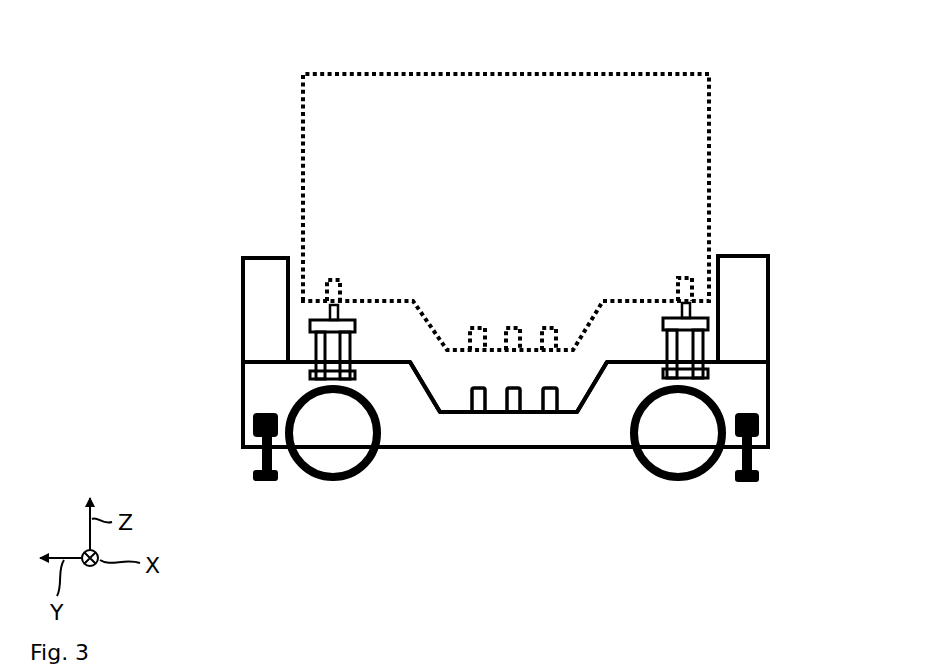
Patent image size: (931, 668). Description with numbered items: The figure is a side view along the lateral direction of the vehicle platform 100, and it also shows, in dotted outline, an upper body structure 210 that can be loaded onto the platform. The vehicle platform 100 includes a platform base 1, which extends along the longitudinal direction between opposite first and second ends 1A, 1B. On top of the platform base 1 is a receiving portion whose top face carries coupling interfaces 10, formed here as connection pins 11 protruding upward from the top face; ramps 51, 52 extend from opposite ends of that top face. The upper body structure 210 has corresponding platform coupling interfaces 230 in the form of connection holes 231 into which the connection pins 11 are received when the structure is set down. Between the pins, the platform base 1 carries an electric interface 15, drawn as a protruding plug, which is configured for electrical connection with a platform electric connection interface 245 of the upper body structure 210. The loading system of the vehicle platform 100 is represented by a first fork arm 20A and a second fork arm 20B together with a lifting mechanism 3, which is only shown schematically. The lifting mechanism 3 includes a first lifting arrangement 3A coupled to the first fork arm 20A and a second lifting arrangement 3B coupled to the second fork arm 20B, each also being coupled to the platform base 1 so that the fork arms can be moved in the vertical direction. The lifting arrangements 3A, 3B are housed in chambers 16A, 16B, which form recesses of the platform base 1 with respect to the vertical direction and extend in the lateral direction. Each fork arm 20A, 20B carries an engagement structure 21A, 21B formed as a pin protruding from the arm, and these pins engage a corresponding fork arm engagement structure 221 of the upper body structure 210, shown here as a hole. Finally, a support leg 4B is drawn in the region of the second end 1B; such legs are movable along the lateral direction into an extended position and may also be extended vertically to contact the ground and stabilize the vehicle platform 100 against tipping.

The vehicle platform 100 is at (777, 137).
The upper body structure 210 is at (547, 72).
The platform coupling interfaces 230 is at (522, 275).
The connection holes 231 is at (477, 328).
The platform electric connection interface 245 is at (513, 328).
The fork arm engagement structure 221 is at (334, 279).
The platform base 1 is at (225, 360).
The first end 1A is at (775, 247).
The second end 1B is at (241, 231).
The ramp 51 is at (410, 380).
The ramp 52 is at (590, 400).
The coupling interfaces 10 is at (506, 441).
The connection pins 11 is at (472, 400).
The electric interface 15 is at (513, 400).
The second support leg 4B is at (253, 420).
The lifting mechanism 3 is at (484, 319).
The first lifting arrangement 3A is at (710, 347).
The second lifting arrangement 3B is at (308, 347).
The first fork arm 20A is at (720, 322).
The second fork arm 20B is at (310, 322).
The engagement structure 21A is at (680, 308).
The engagement structure 21B is at (343, 310).
The chamber 16A is at (708, 370).
The chamber 16B is at (310, 375).